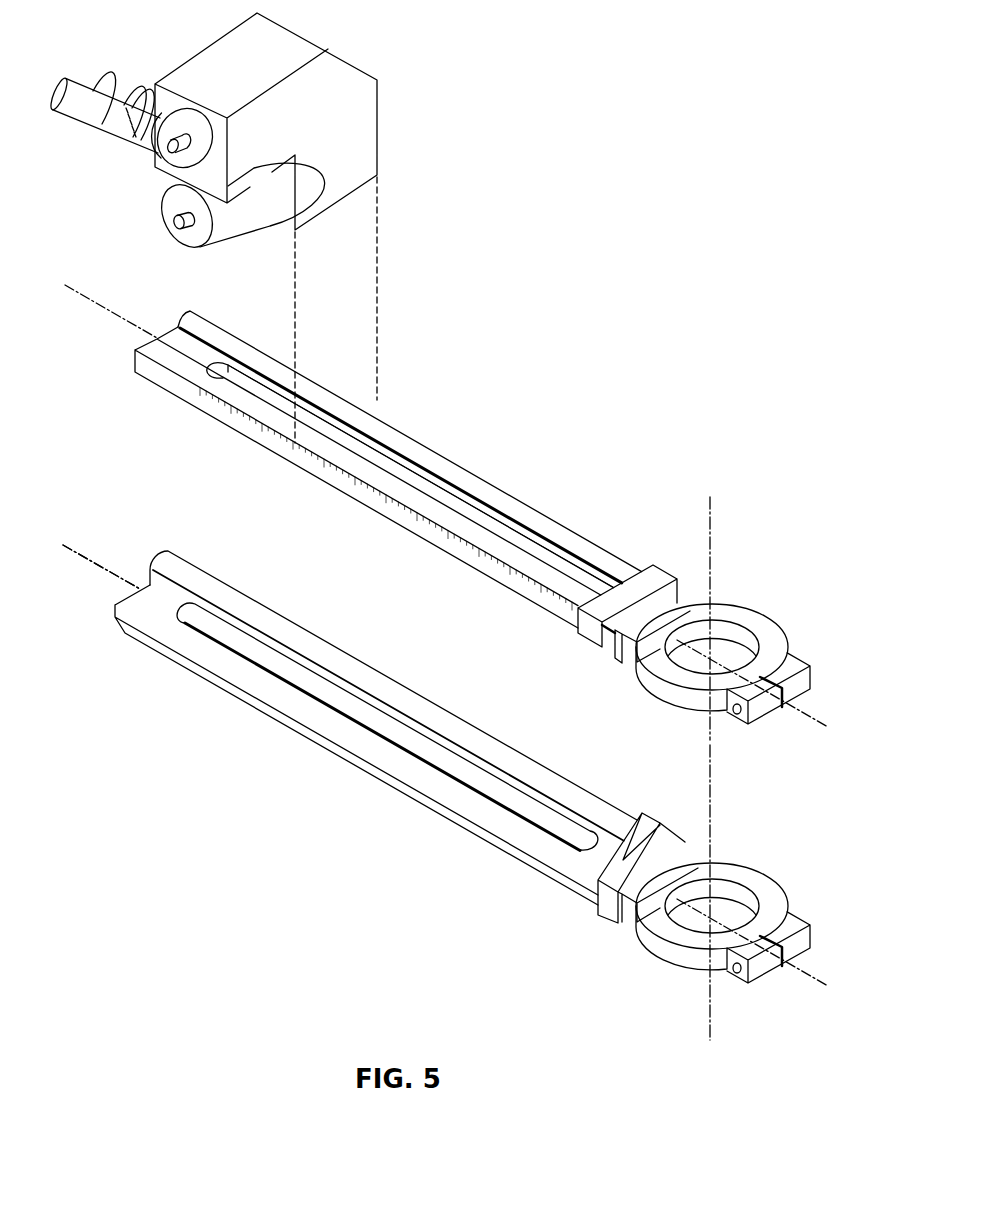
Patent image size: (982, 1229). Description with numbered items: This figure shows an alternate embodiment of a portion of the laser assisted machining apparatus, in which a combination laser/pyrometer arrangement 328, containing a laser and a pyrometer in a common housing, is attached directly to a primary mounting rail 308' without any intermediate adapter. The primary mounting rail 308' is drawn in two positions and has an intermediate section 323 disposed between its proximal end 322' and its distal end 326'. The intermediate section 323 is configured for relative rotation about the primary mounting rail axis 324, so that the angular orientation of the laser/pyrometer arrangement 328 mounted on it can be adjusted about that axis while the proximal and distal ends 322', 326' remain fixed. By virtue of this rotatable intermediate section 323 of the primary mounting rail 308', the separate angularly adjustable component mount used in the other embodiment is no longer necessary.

The combination laser/pyrometer arrangement 328 is at (360, 127).
The distal end of the primary mounting rail 326' is at (379, 549).
The intermediate section of the primary mounting rail 323 is at (461, 477).
The primary mounting rail 308' is at (395, 608).
The proximal end of the primary mounting rail 322' is at (732, 768).
The primary mounting rail axis 324 is at (80, 560).